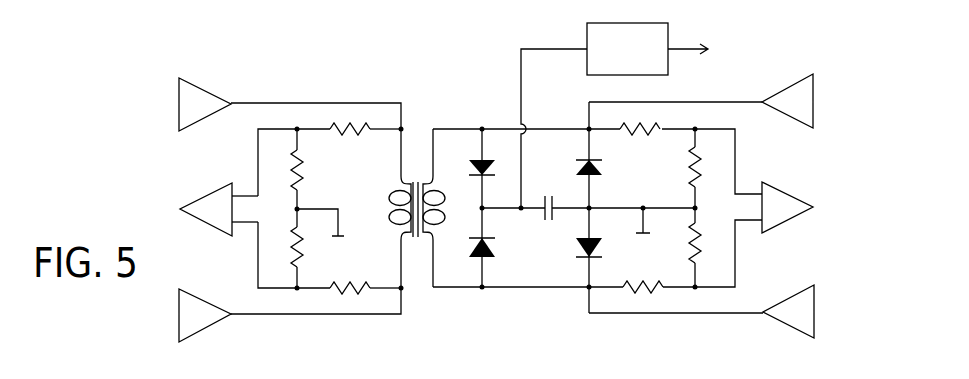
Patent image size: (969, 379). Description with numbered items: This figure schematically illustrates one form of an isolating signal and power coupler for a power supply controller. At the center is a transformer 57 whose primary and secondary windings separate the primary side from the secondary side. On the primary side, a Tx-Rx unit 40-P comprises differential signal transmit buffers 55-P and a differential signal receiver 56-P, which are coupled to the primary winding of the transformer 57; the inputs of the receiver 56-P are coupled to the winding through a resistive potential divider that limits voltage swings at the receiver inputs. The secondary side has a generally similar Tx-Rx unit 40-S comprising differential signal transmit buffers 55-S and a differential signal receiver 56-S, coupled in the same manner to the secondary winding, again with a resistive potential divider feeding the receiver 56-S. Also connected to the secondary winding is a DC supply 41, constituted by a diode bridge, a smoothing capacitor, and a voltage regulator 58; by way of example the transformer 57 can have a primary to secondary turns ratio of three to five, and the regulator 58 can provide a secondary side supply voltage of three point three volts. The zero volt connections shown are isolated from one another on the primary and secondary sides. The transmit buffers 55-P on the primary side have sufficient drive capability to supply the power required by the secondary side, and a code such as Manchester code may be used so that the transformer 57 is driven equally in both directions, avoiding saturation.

The primary side transmit buffers 55-P is at (180, 104).
The primary side differential signal receiver 56-P is at (188, 208).
The primary side Tx-Rx unit 40-P is at (225, 170).
The transformer 57 is at (413, 177).
The DC supply 41 is at (560, 100).
The voltage regulator 58 is at (592, 33).
The secondary side transmit buffers 55-S is at (800, 88).
The secondary side differential signal receiver 56-S is at (781, 216).
The secondary side Tx-Rx unit 40-S is at (809, 166).